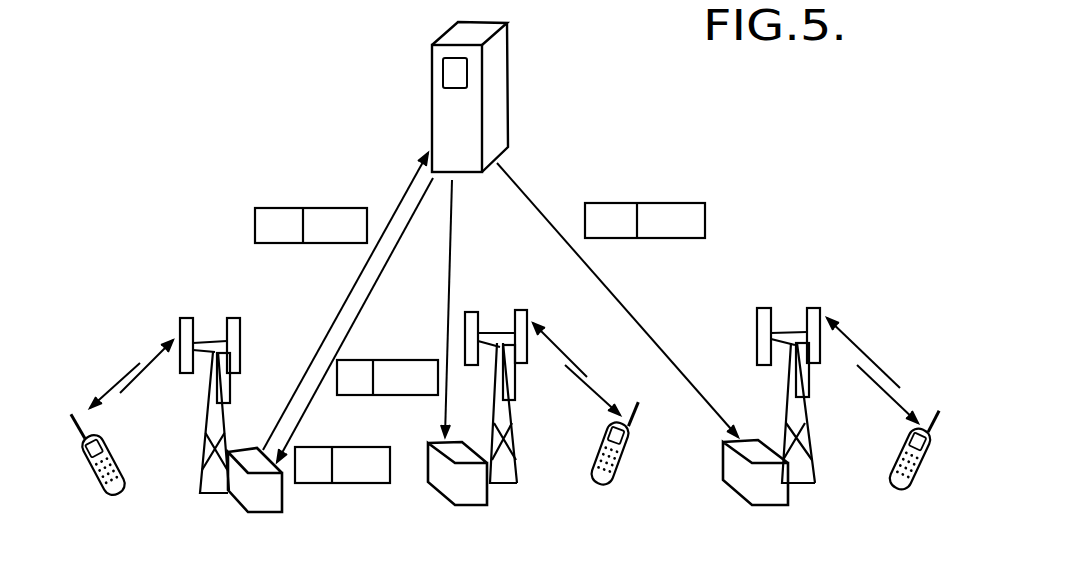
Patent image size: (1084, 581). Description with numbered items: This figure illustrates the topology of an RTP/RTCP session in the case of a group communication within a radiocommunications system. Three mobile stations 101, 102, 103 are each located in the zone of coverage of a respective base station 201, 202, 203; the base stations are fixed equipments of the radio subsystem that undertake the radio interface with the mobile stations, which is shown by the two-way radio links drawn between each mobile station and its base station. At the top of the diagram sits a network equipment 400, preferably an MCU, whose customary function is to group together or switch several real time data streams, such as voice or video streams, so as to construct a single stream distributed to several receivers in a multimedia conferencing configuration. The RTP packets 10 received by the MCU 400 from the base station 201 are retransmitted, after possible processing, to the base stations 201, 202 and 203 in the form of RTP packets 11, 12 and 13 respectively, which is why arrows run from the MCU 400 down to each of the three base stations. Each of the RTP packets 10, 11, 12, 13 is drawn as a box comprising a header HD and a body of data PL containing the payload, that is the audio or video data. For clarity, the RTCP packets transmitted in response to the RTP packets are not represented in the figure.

The network equipment 400 is at (510, 90).
The RTP packets 10 is at (313, 208).
The RTP packets 11 is at (355, 483).
The RTP packets 12 is at (405, 360).
The RTP packets 13 is at (643, 203).
The base station 201 is at (263, 513).
The base station 202 is at (472, 507).
The base station 203 is at (760, 506).
The mobile station 101 is at (113, 497).
The mobile station 102 is at (623, 470).
The mobile station 103 is at (905, 488).